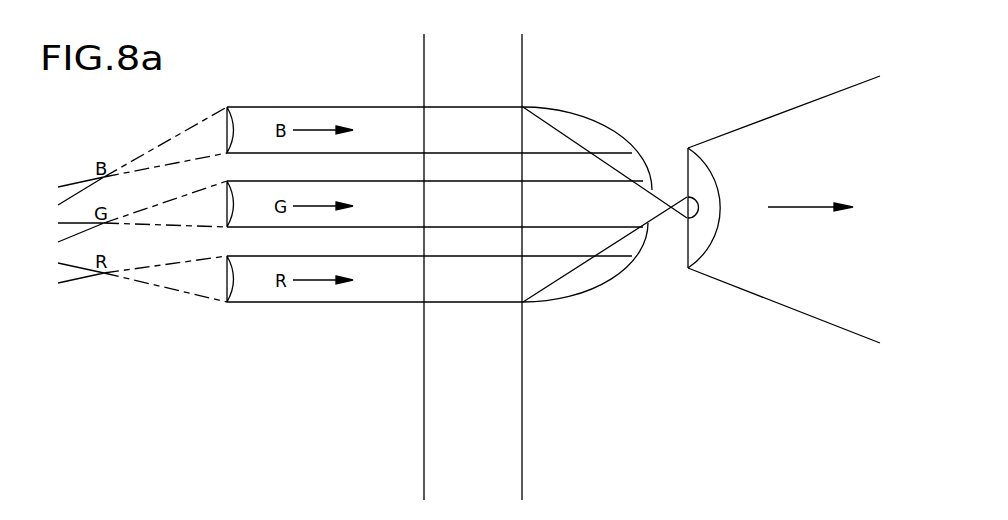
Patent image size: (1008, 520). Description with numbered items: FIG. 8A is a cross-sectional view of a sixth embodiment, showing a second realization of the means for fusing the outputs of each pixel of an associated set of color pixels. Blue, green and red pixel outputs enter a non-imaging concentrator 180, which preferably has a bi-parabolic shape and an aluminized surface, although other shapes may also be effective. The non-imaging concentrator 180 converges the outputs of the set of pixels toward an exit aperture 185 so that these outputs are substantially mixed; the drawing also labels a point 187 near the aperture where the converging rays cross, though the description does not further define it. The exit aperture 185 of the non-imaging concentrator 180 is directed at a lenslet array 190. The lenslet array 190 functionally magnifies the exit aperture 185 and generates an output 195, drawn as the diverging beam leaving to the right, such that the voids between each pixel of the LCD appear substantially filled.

The non-imaging concentrator 180 is at (442, 412).
The exit aperture 185 is at (653, 189).
The focal point 187 is at (665, 220).
The lenslet array 190 is at (686, 262).
The output 195 is at (818, 207).